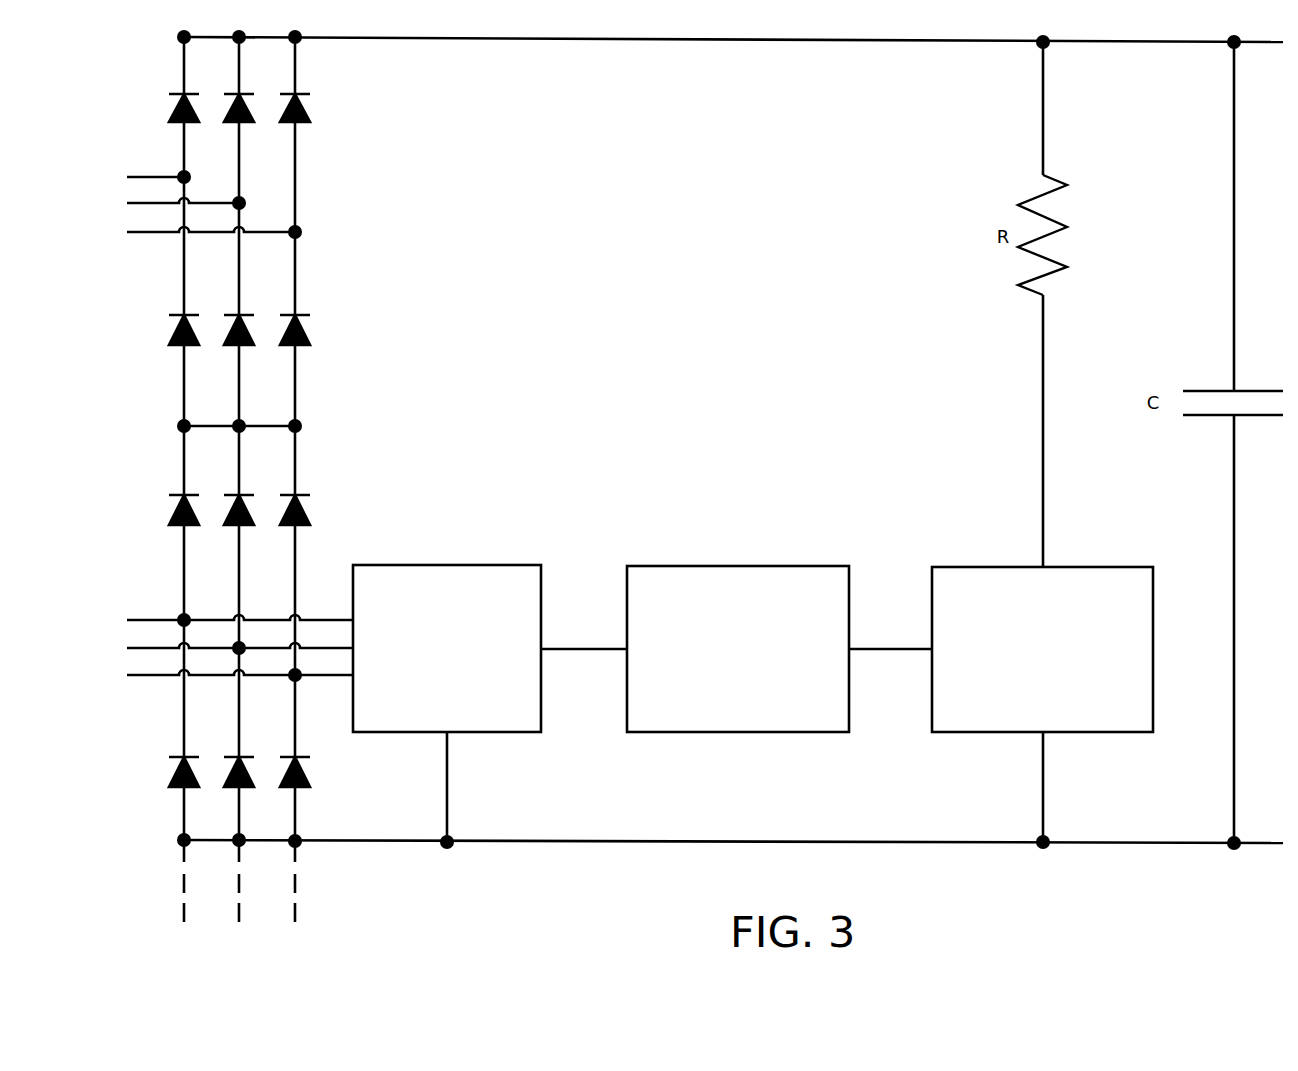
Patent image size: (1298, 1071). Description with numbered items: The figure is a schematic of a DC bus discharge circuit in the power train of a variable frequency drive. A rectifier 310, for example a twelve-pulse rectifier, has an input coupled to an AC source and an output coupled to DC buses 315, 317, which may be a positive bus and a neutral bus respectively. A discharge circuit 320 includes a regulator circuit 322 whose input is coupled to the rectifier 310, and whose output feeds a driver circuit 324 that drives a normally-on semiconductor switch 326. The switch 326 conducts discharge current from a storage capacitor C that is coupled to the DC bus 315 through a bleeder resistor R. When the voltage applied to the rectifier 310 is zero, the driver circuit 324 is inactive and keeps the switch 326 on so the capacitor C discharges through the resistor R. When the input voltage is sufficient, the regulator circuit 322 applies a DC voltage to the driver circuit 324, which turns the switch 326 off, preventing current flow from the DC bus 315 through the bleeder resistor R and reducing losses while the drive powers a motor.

The rectifier 310 is at (363, 300).
The DC bus 315 is at (533, 39).
The DC bus 317 is at (516, 841).
The discharge circuit 320 is at (487, 453).
The regulator circuit 322 is at (490, 703).
The driver circuit 324 is at (779, 649).
The semiconductor switch 326 is at (1042, 704).